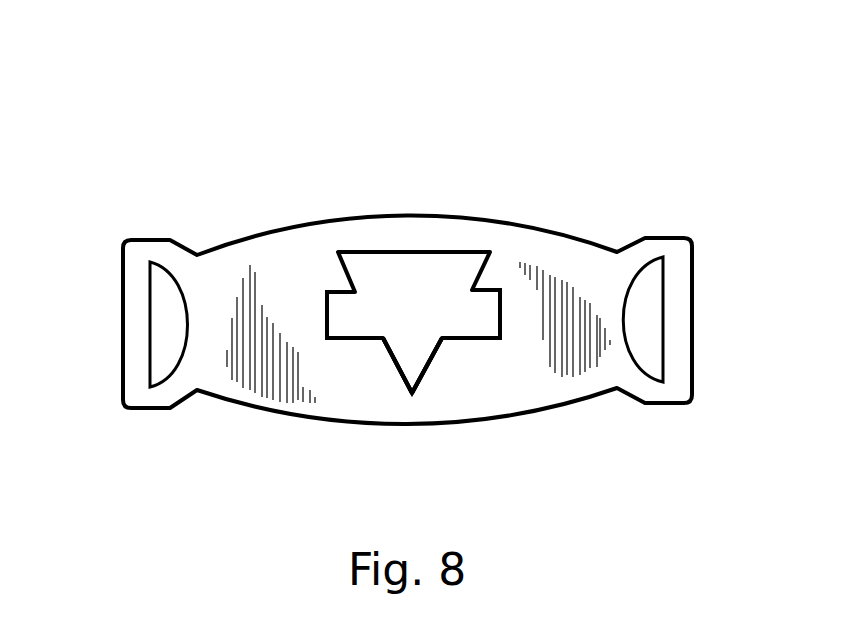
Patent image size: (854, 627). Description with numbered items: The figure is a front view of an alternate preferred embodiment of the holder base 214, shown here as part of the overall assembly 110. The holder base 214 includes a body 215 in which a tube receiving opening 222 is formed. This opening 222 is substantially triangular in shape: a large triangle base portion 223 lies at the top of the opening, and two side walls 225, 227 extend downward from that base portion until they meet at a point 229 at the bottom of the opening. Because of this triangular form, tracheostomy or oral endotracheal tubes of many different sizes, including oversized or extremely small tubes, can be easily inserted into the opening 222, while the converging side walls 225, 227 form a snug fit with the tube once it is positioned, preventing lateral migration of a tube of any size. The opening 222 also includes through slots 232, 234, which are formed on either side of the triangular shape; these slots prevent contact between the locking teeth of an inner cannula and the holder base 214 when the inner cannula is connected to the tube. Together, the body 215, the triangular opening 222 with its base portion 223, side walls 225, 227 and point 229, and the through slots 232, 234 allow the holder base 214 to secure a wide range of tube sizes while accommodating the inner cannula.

The buckle 110 is at (265, 96).
The holder base 214 is at (444, 133).
The body 215 is at (603, 292).
The tube receiving opening 222 is at (435, 288).
The triangle base portion 223 is at (398, 252).
The side wall 225 is at (392, 360).
The side wall 227 is at (430, 357).
The point 229 is at (412, 394).
The through slot 232 is at (340, 317).
The through slot 234 is at (492, 315).